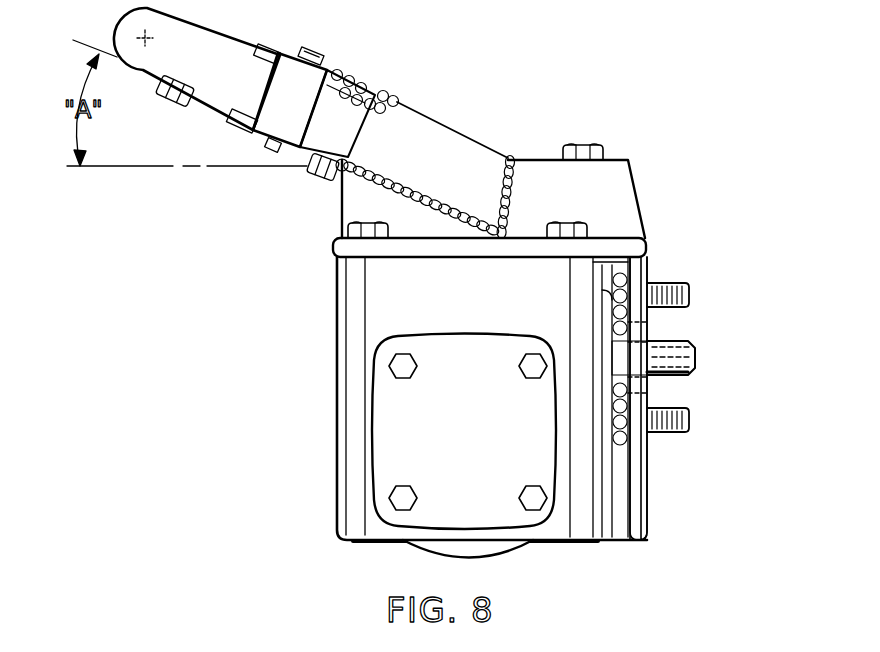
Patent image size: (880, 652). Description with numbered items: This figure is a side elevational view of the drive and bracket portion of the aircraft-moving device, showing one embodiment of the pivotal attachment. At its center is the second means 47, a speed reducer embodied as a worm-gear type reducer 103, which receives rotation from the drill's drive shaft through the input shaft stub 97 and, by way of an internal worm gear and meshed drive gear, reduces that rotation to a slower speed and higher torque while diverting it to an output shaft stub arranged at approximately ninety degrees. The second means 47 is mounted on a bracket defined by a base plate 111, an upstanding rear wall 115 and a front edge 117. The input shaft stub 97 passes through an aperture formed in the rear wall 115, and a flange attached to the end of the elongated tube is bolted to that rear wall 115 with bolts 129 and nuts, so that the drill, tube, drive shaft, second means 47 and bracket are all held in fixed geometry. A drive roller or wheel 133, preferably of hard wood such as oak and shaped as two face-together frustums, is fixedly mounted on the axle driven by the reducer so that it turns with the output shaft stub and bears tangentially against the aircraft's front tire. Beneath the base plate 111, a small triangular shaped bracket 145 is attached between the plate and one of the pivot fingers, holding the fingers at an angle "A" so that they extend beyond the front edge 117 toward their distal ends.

The second means 47 is at (327, 329).
The input shaft stub 97 is at (683, 352).
The worm-gear type reducer 103 is at (450, 428).
The base plate 111 is at (617, 247).
The rear wall 115 is at (638, 510).
The front edge 117 is at (333, 247).
The bolts 129 is at (678, 288).
The drive roller or wheel 133 is at (433, 543).
The triangular shaped bracket 145 is at (360, 202).